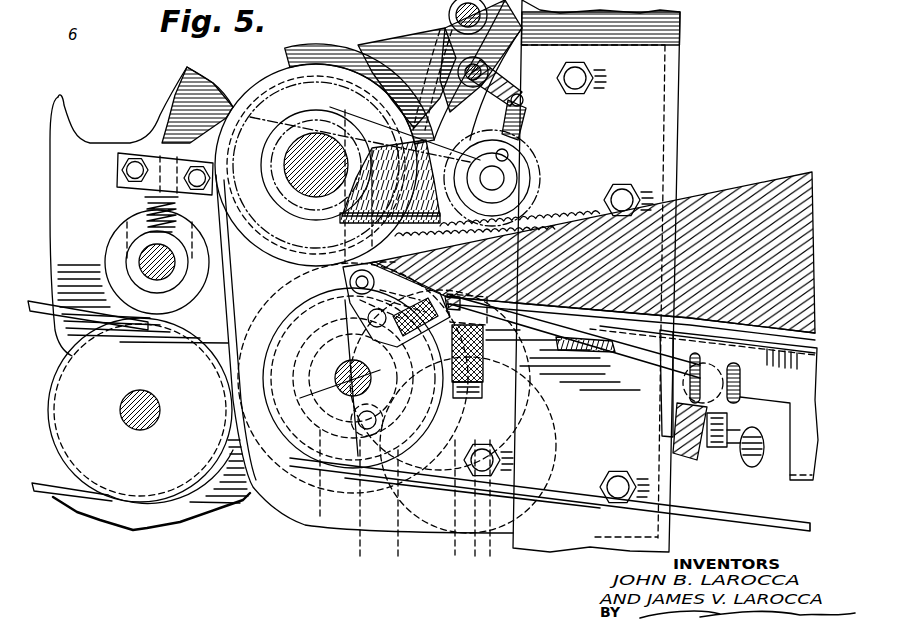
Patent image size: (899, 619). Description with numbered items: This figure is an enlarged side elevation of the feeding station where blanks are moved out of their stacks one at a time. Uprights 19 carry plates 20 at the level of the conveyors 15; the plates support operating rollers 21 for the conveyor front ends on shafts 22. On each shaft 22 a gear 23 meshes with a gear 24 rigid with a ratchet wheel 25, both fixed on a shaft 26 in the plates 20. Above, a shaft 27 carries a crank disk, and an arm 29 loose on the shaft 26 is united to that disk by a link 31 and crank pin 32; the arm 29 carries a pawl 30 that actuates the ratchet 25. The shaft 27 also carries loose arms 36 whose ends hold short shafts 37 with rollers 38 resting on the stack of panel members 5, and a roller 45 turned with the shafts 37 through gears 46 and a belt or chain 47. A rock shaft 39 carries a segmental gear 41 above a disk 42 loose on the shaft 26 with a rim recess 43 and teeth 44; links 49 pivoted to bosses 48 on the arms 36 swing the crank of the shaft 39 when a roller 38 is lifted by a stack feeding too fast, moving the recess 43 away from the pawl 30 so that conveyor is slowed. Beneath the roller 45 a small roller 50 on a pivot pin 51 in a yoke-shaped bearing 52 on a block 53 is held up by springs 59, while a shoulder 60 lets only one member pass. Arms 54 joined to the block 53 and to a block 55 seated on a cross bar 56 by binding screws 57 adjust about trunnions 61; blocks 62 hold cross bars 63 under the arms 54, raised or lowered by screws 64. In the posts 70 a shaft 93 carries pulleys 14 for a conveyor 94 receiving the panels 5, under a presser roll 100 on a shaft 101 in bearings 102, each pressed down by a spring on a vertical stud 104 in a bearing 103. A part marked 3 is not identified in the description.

The clamp frame 3 is at (790, 378).
The panel members 5 is at (780, 186).
The pulleys 14 is at (70, 408).
The conveyors 15 is at (712, 520).
The uprights 19 is at (682, 30).
The plates 20 is at (382, 520).
The operating rollers 21 is at (360, 520).
The shafts 22 is at (398, 520).
The gear 23 is at (272, 508).
The gear 24 is at (455, 556).
The ratchet wheel 25 is at (237, 415).
The shaft 26 is at (504, 462).
The shaft 27 is at (296, 148).
The arm 29 is at (338, 530).
The pawl 30 is at (302, 530).
The link 31 is at (343, 243).
The crank pin 32 is at (356, 120).
The arms 36 is at (365, 80).
The short rotatable shaft 37 is at (505, 178).
The rollers 38 is at (535, 176).
The rock shaft 39 is at (462, 66).
The segmental gear 41 is at (430, 80).
The disk 42 is at (492, 534).
The recess 43 is at (353, 378).
The teeth 44 is at (562, 215).
The roller 45 is at (284, 66).
The gears 46 is at (170, 100).
The belt or chain 47 is at (475, 128).
The fixed bosses 48 is at (508, 155).
The links 49 is at (520, 98).
The small roller 50 is at (378, 264).
The pivot pin 51 is at (368, 320).
The yoke-shaped bearing 52 is at (345, 292).
The block 53 is at (320, 356).
The arms 54 is at (650, 372).
The block 55 is at (735, 402).
The cross bar 56 is at (688, 460).
The binding screws 57 is at (756, 468).
The springs 59 is at (420, 522).
The transverse shoulder 60 is at (352, 266).
The trunnions 61 is at (720, 458).
The blocks 62 is at (472, 536).
The cross bars 63 is at (510, 352).
The bolts or screws 64 is at (484, 390).
The posts 70 is at (55, 118).
The shaft 93 is at (137, 430).
The conveyor 94 is at (42, 493).
The presser roll 100 is at (110, 246).
The shaft 101 is at (140, 266).
The bearing 102 is at (140, 283).
The bearing 103 is at (130, 153).
The vertical stud 104 is at (140, 206).